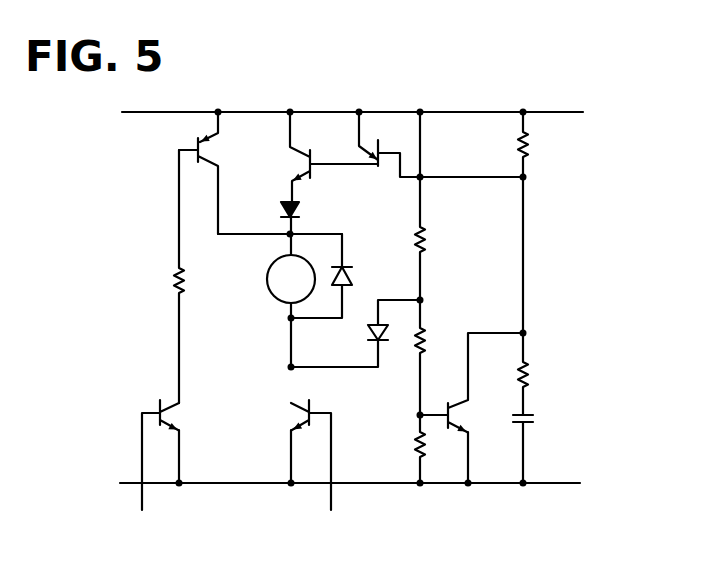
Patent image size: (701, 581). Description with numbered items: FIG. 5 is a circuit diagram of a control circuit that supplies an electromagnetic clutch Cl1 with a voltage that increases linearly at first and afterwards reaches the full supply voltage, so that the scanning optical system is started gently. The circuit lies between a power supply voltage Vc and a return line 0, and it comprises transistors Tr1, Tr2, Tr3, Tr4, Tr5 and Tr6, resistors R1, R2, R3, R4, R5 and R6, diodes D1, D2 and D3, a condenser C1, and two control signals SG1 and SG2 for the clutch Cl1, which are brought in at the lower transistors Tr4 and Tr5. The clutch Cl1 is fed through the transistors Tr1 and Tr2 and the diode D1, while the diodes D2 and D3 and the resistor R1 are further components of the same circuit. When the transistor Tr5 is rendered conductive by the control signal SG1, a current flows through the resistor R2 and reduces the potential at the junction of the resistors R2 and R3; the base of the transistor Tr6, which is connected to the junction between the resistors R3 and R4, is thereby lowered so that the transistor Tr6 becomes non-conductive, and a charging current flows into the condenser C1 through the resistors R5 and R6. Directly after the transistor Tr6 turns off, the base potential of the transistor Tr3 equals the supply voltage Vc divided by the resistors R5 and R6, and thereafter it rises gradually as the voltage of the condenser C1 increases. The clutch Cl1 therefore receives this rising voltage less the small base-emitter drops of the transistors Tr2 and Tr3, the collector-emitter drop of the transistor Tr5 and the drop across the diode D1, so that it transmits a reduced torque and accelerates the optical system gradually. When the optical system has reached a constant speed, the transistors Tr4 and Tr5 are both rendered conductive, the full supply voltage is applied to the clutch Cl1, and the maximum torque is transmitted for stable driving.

The transistor Tr1 is at (210, 146).
The transistor Tr2 is at (305, 161).
The transistor Tr3 is at (372, 150).
The transistor Tr4 is at (165, 412).
The transistor Tr5 is at (304, 415).
The transistor Tr6 is at (455, 406).
The diode D1 is at (300, 210).
The diode D2 is at (355, 275).
The diode D3 is at (368, 330).
The resistor R1 is at (190, 287).
The resistor R2 is at (428, 245).
The resistor R3 is at (427, 333).
The resistor R4 is at (413, 445).
The resistor R5 is at (517, 140).
The resistor R6 is at (530, 375).
The condenser C1 is at (535, 418).
The clutch Cl1 is at (291, 300).
The power supply voltage Vc is at (338, 113).
The ground / zero potential line 0 is at (339, 484).
The control signal SG1 is at (141, 526).
The control signal SG2 is at (329, 526).